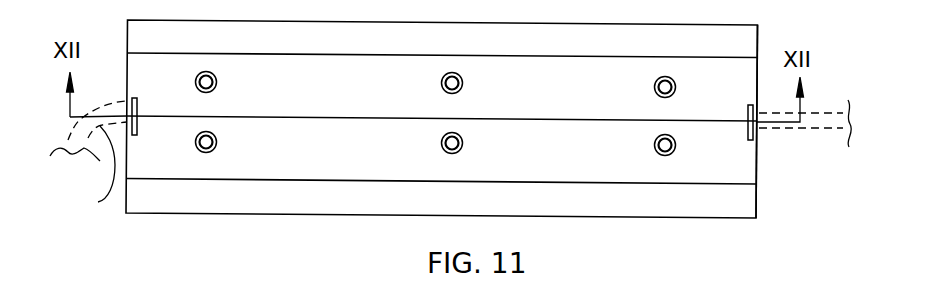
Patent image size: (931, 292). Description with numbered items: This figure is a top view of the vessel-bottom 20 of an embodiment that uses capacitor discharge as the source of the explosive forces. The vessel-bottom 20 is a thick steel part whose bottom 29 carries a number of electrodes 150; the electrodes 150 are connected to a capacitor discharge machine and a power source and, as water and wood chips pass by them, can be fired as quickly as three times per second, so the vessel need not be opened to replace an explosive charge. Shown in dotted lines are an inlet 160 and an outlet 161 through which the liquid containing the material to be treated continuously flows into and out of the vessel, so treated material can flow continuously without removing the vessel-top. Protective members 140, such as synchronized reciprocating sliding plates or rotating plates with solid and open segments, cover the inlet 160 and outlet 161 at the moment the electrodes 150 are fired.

The bottom 29 is at (608, 155).
The vessel-bottom 20 is at (819, 143).
The protective members 140 is at (154, 94).
The electrodes 150 is at (441, 140).
The inlet 160 is at (98, 202).
The outlet 161 is at (845, 112).